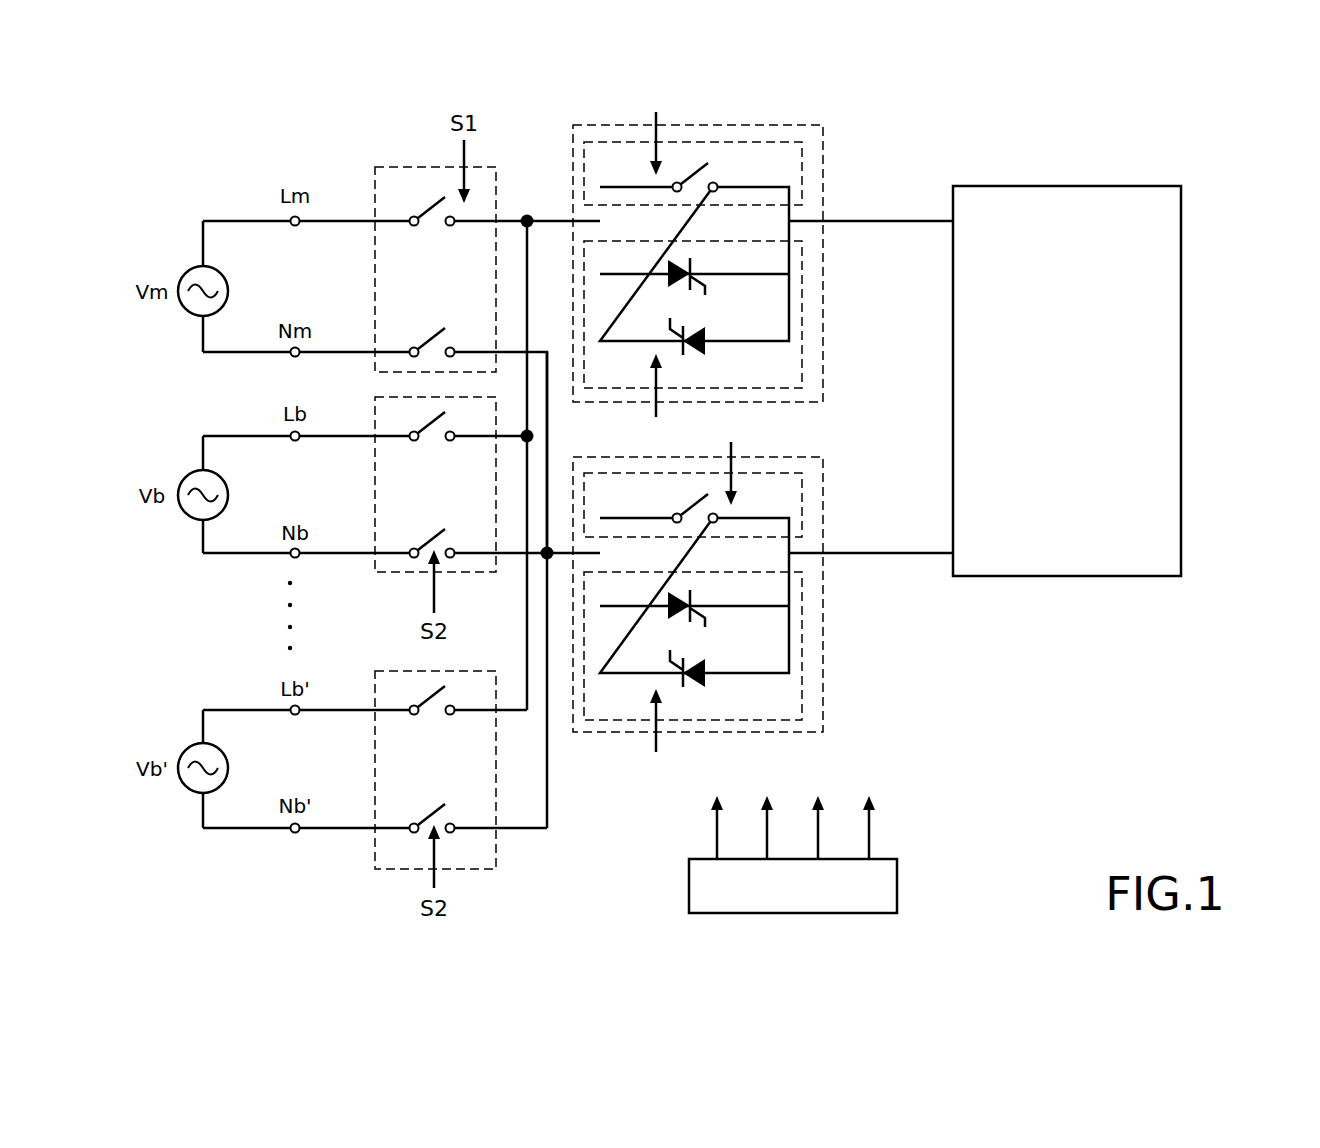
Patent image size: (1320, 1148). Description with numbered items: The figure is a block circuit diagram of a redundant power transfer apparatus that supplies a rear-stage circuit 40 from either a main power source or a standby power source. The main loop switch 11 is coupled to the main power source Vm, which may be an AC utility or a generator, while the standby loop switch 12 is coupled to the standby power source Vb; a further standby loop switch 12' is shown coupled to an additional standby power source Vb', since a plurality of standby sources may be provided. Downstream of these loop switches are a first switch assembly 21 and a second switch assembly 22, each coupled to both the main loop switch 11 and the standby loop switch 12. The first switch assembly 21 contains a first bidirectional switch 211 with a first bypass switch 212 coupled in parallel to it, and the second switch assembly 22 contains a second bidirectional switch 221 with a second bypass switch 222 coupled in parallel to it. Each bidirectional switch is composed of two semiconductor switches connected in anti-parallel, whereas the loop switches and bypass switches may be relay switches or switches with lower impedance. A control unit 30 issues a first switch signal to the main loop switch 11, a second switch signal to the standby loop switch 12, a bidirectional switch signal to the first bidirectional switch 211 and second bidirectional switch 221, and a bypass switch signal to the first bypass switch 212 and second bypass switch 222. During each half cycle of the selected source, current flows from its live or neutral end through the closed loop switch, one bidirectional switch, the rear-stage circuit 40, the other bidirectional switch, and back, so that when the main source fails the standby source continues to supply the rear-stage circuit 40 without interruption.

The main loop switch 11 is at (397, 180).
The standby loop switch 12 is at (398, 467).
The additional second switch module 12' is at (411, 738).
The first switch assembly 21 is at (745, 261).
The first bidirectional switch 211 is at (782, 367).
The first bypass switch 212 is at (772, 160).
The second switch assembly 22 is at (746, 599).
The second bidirectional switch 221 is at (787, 702).
The second bypass switch 222 is at (777, 495).
The control unit 30 is at (883, 889).
The rear-stage circuit 40 is at (1167, 278).